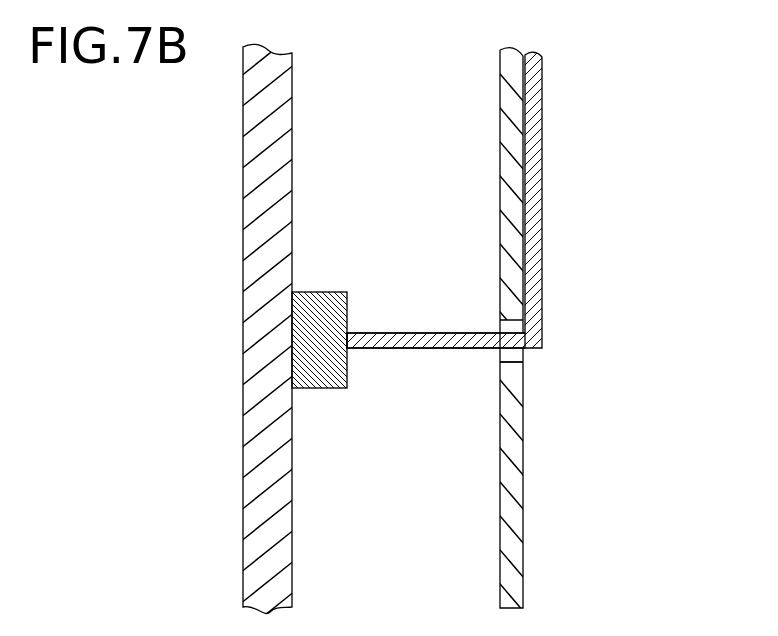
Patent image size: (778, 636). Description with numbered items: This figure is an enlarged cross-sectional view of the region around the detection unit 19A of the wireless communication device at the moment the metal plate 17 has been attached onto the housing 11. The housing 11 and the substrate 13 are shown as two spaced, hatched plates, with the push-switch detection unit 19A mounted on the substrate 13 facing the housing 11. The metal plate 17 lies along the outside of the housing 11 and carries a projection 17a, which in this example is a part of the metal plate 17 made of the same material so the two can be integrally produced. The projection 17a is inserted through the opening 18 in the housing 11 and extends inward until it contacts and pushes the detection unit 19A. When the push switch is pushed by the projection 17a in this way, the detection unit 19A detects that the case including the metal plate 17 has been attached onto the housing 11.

The substrate 13 is at (243, 192).
The detection unit 19A is at (325, 292).
The metal plate 17 is at (543, 271).
The projection 17a is at (450, 349).
The housing 11 is at (523, 569).
The opening 18 is at (523, 362).